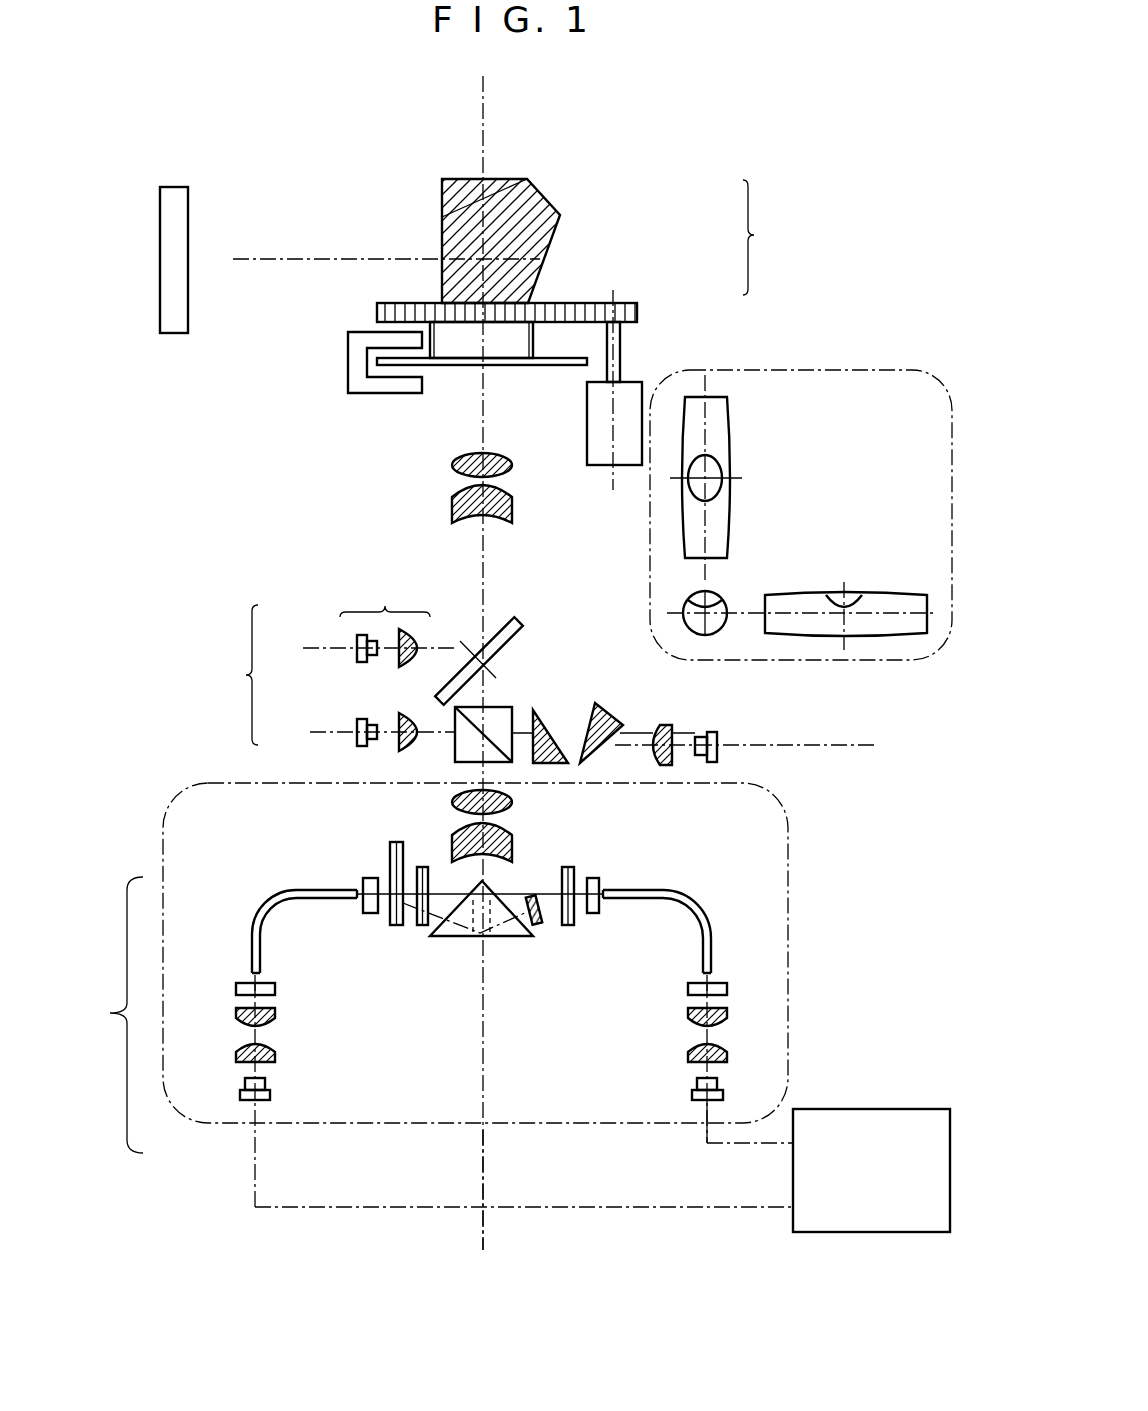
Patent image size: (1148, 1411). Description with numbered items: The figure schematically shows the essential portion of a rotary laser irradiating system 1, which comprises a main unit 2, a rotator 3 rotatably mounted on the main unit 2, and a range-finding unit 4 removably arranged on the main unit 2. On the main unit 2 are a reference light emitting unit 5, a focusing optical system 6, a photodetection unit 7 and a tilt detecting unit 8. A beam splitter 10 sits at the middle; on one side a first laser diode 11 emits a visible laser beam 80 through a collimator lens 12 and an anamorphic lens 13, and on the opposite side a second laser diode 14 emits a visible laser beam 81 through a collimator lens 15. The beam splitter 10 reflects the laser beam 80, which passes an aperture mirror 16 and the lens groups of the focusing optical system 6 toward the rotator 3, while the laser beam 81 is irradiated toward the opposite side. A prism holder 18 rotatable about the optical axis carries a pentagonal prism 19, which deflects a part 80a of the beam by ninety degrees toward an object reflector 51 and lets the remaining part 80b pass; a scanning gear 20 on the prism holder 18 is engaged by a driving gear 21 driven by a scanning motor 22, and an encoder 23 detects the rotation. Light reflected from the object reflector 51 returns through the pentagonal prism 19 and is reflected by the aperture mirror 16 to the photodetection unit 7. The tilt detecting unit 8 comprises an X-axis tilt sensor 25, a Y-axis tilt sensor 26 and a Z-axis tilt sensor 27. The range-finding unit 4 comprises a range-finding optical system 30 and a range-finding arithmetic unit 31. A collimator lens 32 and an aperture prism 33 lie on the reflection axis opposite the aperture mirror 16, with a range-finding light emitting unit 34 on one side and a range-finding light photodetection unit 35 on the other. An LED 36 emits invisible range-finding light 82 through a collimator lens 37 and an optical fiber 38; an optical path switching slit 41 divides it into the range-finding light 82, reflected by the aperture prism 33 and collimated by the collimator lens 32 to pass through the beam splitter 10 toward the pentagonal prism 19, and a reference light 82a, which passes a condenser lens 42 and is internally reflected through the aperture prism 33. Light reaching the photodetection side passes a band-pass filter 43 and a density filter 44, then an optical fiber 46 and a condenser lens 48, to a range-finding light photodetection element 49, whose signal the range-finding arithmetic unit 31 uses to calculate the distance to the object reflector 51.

The rotary laser irradiating system 1 is at (855, 92).
The main unit 2 is at (246, 675).
The rotator 3 is at (754, 235).
The range-finding unit 4 is at (110, 1013).
The reference light emitting unit 5 is at (738, 730).
The focusing optical system 6 is at (520, 448).
The photodetection unit 7 is at (385, 606).
The tilt detecting unit 8 is at (843, 370).
The beam splitter 10 is at (505, 707).
The first laser diode 11 is at (710, 732).
The collimator lens 12 is at (658, 725).
The anamorphic lens 13 is at (525, 695).
The second laser diode 14 is at (360, 719).
The collimator lens 15 is at (401, 714).
The aperture mirror 16 is at (495, 620).
The prism holder 18 is at (521, 329).
The pentagonal prism 19 is at (558, 232).
The scanning gear 20 is at (385, 303).
The driving gear 21 is at (618, 300).
The scanning motor 22 is at (640, 384).
The encoder 23 is at (348, 414).
The X-axis tilt sensor 25 is at (897, 594).
The Y-axis tilt sensor 26 is at (722, 594).
The Z-axis tilt sensor 27 is at (728, 425).
The range-finding optical system 30 is at (790, 876).
The range-finding arithmetic unit 31 is at (878, 1108).
The collimator lens 32 is at (523, 870).
The aperture prism 33 is at (452, 938).
The range-finding light emitting unit 34 is at (684, 891).
The range-finding light photodetection unit 35 is at (285, 888).
The LED 36 is at (690, 1093).
The collimator lens 37 is at (737, 1072).
The optical fiber 38 is at (697, 905).
The optical path switching slit 41 is at (574, 870).
The condenser lens 42 is at (540, 925).
The band-pass filter 43 is at (423, 926).
The density filter 44 is at (397, 926).
The optical fiber 46 is at (293, 900).
The condenser lens 48 is at (225, 1072).
The range-finding light photodetection element 49 is at (272, 1090).
The object reflector 51 is at (175, 187).
The laser beam 80 is at (640, 746).
The part of laser beam 80a is at (290, 258).
The remaining part of laser beam 80b is at (483, 95).
The laser beam 81 is at (448, 735).
The range-finding light 82 is at (552, 899).
The reference light 82a is at (500, 936).